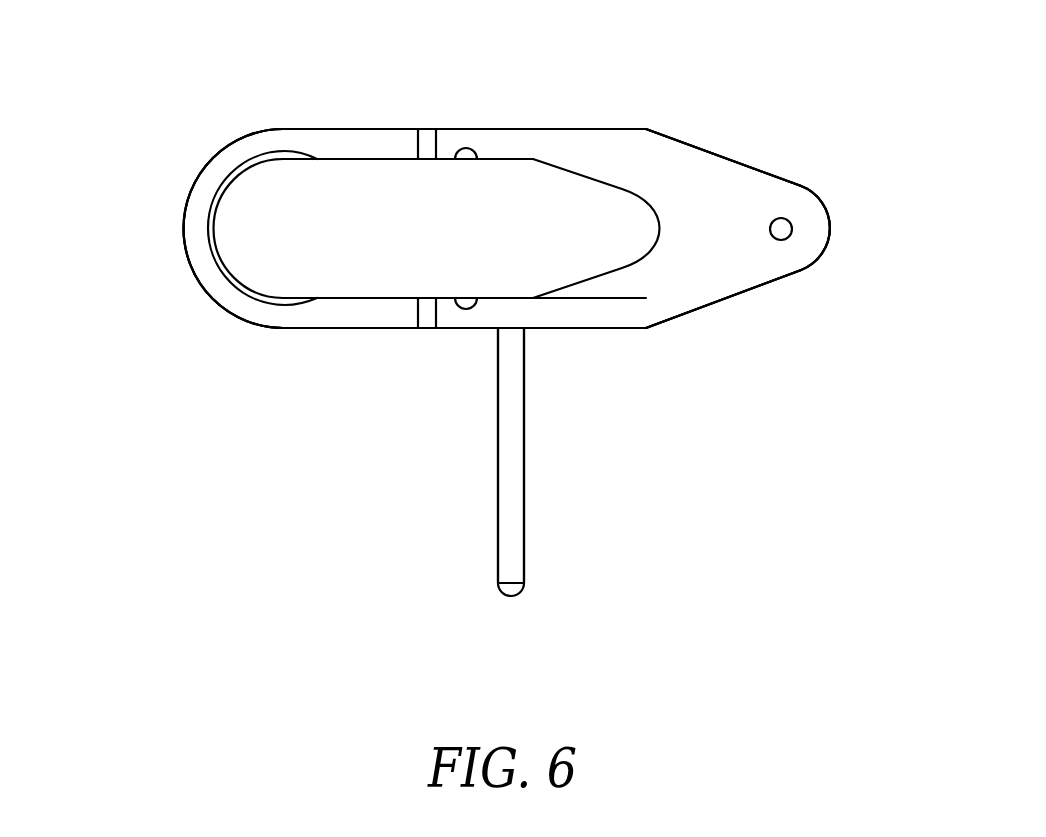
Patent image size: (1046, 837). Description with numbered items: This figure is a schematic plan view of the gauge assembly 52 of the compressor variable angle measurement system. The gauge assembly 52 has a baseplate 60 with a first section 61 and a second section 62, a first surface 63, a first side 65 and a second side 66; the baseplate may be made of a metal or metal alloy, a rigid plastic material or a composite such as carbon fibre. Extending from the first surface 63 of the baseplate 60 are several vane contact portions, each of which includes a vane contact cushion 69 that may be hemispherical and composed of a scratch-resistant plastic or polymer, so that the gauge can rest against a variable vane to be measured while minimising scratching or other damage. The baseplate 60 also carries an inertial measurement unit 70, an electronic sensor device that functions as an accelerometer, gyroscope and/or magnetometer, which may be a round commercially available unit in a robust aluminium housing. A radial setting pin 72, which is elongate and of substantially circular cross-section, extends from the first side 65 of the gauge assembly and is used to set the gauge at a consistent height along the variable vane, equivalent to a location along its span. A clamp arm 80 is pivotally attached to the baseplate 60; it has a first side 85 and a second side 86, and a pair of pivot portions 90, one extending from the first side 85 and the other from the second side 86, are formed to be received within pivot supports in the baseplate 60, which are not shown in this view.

The gauge assembly 52 is at (221, 351).
The baseplate 60 is at (773, 284).
The first section 61 is at (836, 228).
The second section 62 is at (176, 218).
The first surface 63 is at (715, 280).
The first side 65 is at (618, 329).
The second side 66 is at (533, 128).
The vane contact cushion 69 is at (474, 155).
The inertial measurement unit 70 is at (280, 301).
The radial setting pin 72 is at (524, 505).
The clamp arm 80 is at (616, 186).
The first side 85 is at (353, 299).
The second side 86 is at (445, 158).
The pivot portions 90 is at (420, 314).